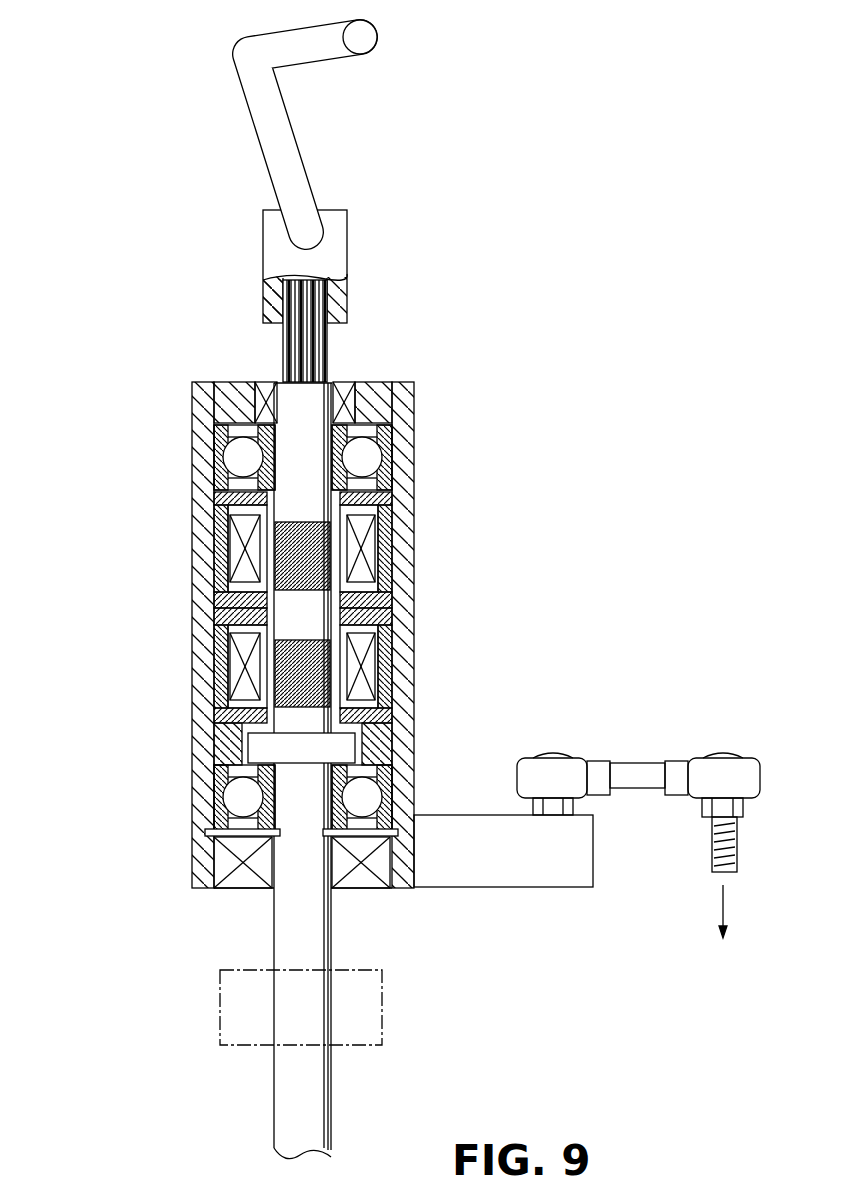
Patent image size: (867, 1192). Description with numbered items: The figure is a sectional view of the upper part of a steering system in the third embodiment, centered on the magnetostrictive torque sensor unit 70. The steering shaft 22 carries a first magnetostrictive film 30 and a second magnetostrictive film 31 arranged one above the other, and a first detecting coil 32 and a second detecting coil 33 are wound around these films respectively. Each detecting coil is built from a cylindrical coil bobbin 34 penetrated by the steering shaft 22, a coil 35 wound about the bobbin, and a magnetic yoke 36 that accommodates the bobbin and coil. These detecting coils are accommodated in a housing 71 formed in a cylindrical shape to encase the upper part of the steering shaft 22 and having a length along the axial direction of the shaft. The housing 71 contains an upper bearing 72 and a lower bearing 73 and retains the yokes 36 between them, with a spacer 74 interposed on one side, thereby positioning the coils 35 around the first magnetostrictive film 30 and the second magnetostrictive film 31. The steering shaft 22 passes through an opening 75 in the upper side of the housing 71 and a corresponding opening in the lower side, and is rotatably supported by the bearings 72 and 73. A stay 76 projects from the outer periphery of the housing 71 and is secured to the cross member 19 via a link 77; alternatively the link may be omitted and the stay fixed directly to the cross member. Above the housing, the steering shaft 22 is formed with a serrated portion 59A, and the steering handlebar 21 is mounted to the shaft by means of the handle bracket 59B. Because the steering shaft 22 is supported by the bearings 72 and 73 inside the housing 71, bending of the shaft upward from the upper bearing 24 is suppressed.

The steering handlebar 21 is at (286, 135).
The handle bracket 59B is at (274, 252).
The serrated portion 59A is at (297, 355).
The opening 75 is at (343, 397).
The housing 71 is at (387, 380).
The magnetostrictive torque sensor unit 70 is at (493, 422).
The bearing 72 is at (217, 443).
The first detecting coil 32 is at (396, 522).
The second detecting coil 33 is at (396, 653).
The coil bobbin 34 is at (227, 512).
The magnetic yoke 36 is at (384, 575).
The coil 35 is at (235, 540).
The first magnetostrictive film 30 is at (302, 562).
The second magnetostrictive film 31 is at (298, 672).
The spacer 74 is at (388, 752).
The bearing 73 is at (233, 793).
The stay 76 is at (215, 857).
The link 77 is at (637, 758).
The steering shaft 22 is at (317, 913).
The upper bearing 24 is at (382, 1020).
The cross member 19 is at (724, 929).